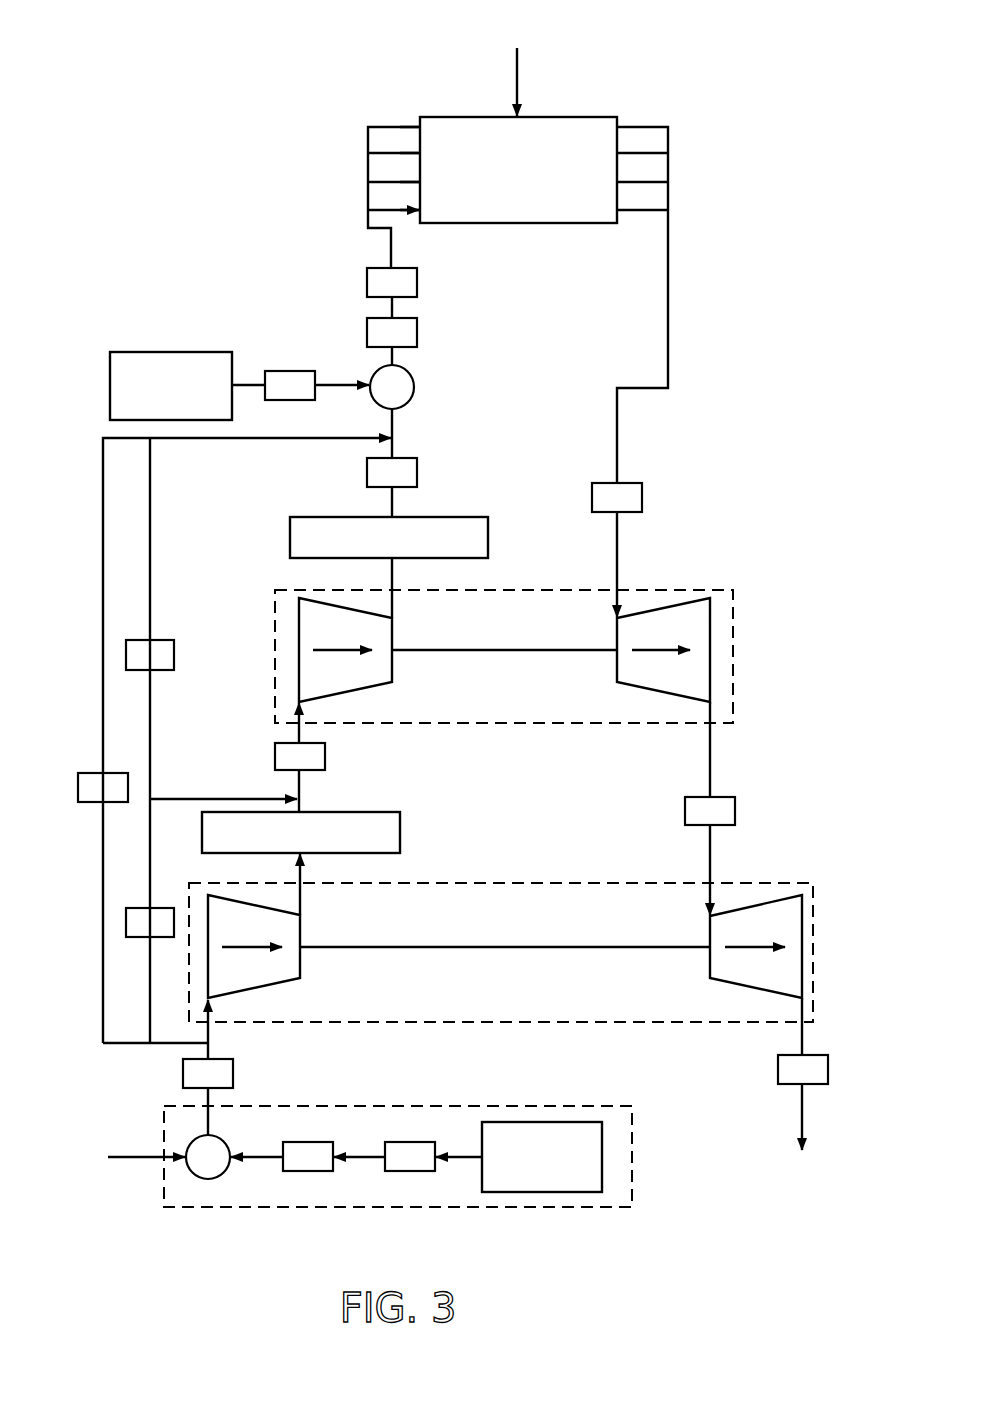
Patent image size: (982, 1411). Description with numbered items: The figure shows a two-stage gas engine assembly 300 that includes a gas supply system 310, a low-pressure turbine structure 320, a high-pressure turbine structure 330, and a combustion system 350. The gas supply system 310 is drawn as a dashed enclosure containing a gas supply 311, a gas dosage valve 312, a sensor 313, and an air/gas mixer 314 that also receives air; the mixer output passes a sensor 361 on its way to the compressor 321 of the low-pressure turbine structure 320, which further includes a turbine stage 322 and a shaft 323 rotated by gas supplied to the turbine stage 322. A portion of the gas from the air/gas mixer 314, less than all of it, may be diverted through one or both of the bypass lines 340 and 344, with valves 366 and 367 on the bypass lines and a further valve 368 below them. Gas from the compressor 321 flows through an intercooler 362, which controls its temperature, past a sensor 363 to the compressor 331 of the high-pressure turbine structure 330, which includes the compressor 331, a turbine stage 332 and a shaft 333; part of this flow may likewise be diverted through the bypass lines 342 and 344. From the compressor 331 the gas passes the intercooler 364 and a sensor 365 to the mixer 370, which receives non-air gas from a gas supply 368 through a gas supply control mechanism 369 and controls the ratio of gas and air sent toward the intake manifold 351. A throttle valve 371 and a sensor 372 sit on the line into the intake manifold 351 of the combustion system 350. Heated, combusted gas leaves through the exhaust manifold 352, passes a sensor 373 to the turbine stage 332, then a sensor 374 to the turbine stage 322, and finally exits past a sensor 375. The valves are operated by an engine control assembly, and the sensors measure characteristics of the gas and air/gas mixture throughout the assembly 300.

The two-stage gas engine assembly 300 is at (297, 205).
The gas supply system 310 is at (388, 1193).
The gas supply 311 is at (545, 1192).
The gas dosage valve 312 is at (412, 1171).
The sensor 313 is at (310, 1171).
The air/gas mixer 314 is at (208, 1180).
The low-pressure turbine structure 320 is at (501, 975).
The compressor 321 is at (300, 965).
The turbine stage 322 is at (710, 965).
The shaft 323 is at (505, 946).
The high-pressure turbine structure 330 is at (504, 680).
The compressor 331 is at (392, 665).
The turbine stage 332 is at (617, 665).
The shaft 333 is at (505, 648).
The bypass line 340 is at (100, 517).
The bypass line 342 is at (156, 487).
The bypass line 344 is at (147, 855).
The combustion system 350 is at (468, 117).
The intake manifold 351 is at (403, 128).
The exhaust manifold 352 is at (646, 126).
The sensor 361 is at (233, 1075).
The intercooler 362 is at (400, 833).
The sensor 363 is at (325, 758).
The intercooler 364 is at (488, 540).
The sensor 365 is at (417, 472).
The valve 366 is at (78, 790).
The valve 367 is at (174, 656).
The gas supply 368 is at (170, 352).
The gas supply control mechanism 369 is at (290, 371).
The mixer 370 is at (414, 393).
The throttle valve 371 is at (417, 332).
The sensor 372 is at (417, 282).
The sensor 373 is at (642, 497).
The sensor 374 is at (735, 810).
The sensor 375 is at (778, 1068).